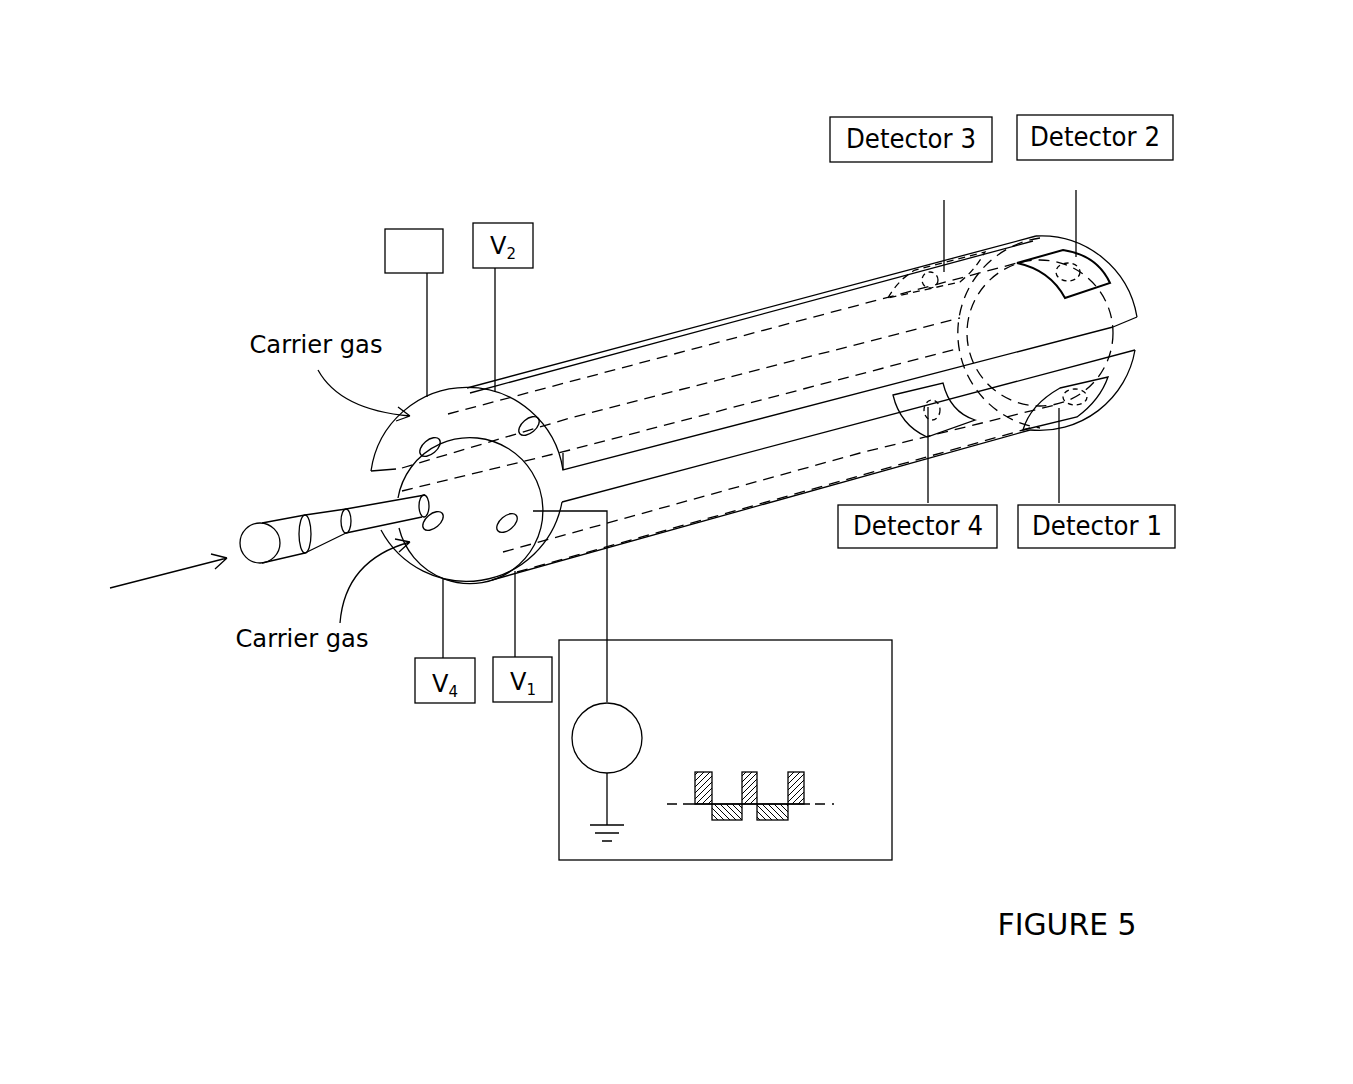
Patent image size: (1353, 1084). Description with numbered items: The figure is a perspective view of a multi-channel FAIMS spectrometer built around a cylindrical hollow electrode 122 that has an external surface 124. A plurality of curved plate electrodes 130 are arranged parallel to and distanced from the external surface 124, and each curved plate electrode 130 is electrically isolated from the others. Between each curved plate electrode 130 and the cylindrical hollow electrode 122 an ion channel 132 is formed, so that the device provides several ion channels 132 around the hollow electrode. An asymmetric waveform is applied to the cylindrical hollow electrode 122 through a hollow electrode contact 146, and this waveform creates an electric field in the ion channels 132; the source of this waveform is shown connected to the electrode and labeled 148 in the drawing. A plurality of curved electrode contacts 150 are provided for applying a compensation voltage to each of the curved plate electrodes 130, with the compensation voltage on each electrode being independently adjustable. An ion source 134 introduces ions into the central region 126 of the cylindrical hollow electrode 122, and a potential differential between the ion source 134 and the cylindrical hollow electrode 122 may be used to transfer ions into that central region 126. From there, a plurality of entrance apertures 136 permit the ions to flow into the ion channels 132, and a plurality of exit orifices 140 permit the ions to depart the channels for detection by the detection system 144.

The cylindrical hollow electrode 122 is at (452, 526).
The external surface 124 is at (512, 412).
The central region 126 is at (438, 542).
The curved plate electrode 130 is at (633, 358).
The ion channel 132 is at (473, 570).
The ion source 134 is at (280, 560).
The entrance aperture 136 is at (419, 447).
The exit orifice 140 is at (1080, 275).
The detection system 144 is at (1117, 503).
The hollow electrode contact 146 is at (612, 612).
The asymmetric waveform generator 148 is at (893, 757).
The curved electrode contact 150 is at (425, 320).